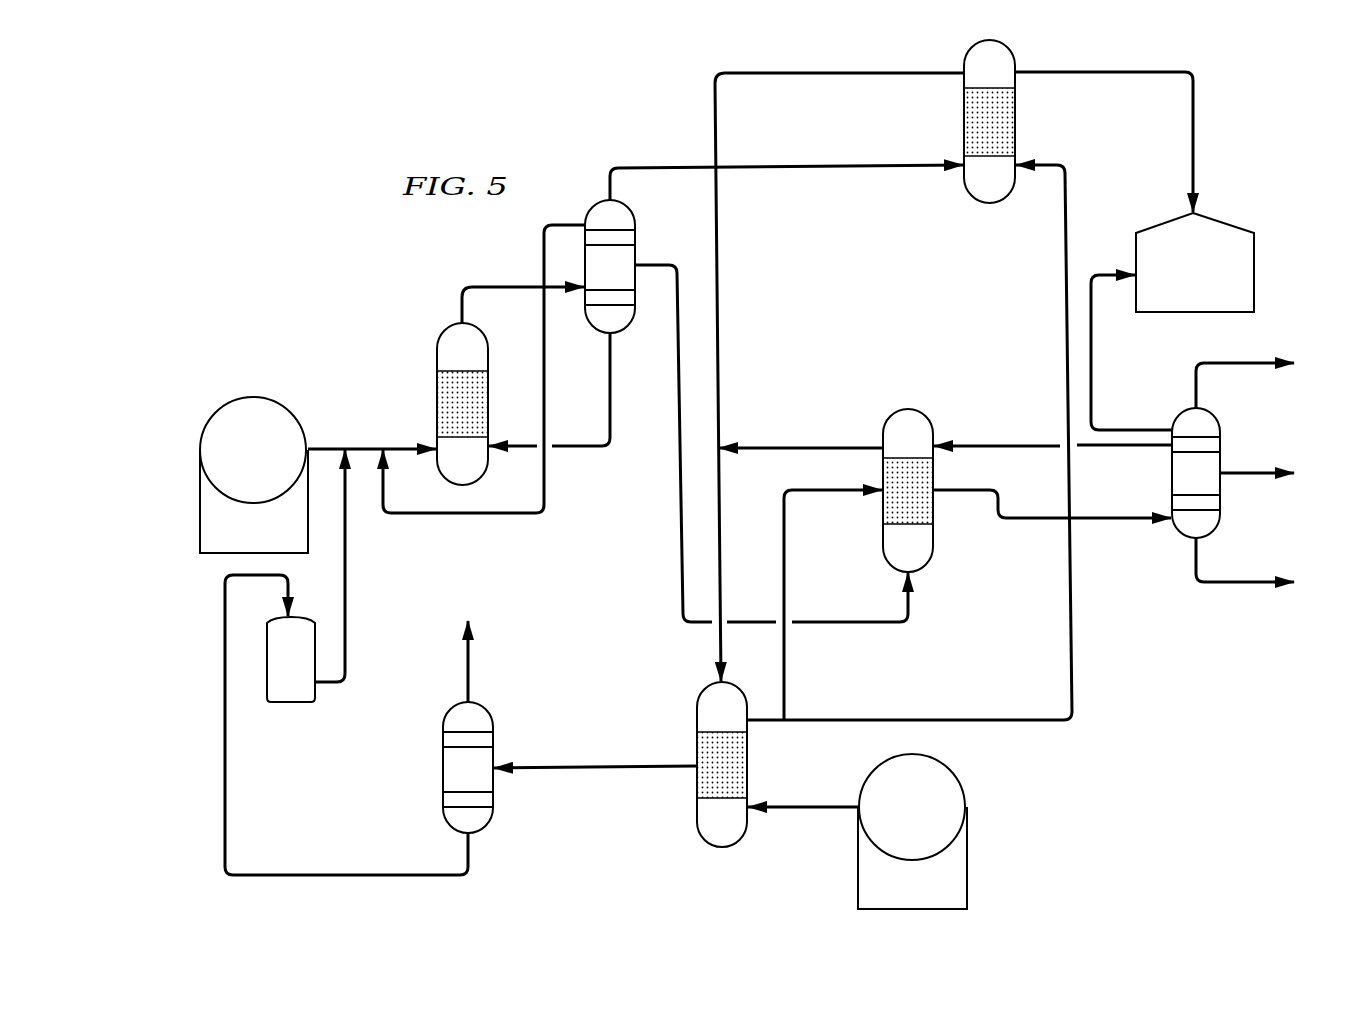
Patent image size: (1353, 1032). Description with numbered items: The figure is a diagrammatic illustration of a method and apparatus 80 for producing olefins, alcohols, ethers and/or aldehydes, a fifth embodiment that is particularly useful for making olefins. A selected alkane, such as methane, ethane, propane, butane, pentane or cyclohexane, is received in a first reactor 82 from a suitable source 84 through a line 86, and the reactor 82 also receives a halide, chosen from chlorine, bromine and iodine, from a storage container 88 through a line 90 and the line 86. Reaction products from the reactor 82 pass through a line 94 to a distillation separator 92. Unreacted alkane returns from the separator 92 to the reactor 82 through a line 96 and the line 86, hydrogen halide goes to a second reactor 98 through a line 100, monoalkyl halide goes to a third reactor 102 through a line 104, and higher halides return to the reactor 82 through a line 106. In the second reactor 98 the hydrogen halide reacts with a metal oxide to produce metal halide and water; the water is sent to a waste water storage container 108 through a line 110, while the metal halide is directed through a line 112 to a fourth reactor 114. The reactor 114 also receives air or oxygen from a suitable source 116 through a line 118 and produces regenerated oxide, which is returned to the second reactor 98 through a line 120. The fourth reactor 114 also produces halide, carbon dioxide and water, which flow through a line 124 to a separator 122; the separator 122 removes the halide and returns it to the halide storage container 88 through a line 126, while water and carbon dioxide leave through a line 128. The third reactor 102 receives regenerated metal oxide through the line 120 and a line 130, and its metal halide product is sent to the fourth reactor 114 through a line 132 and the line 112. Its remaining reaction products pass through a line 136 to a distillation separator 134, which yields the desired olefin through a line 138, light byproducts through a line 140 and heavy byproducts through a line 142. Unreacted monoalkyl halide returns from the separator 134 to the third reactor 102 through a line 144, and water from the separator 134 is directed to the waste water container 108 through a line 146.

The method and apparatus 80 is at (299, 279).
The first reactor 82 is at (437, 357).
The source 84 is at (245, 397).
The line 86 is at (360, 449).
The storage container 88 is at (282, 703).
The line 90 is at (345, 590).
The distillation separator 92 is at (635, 250).
The line 94 is at (492, 287).
The line 96 is at (452, 515).
The second reactor 98 is at (1015, 118).
The line 100 is at (832, 165).
The third reactor 102 is at (914, 409).
The line 104 is at (680, 548).
The line 106 is at (578, 447).
The waste water storage container 108 is at (1254, 264).
The line 110 is at (1193, 130).
The line 112 is at (717, 318).
The fourth reactor 114 is at (698, 825).
The source 116 is at (967, 848).
The line 118 is at (815, 808).
The line 120 is at (1071, 653).
The separator 122 is at (443, 785).
The line 124 is at (605, 769).
The line 126 is at (224, 769).
The line 128 is at (467, 672).
The line 130 is at (832, 491).
The line 132 is at (808, 447).
The distillation separator 134 is at (1172, 483).
The line 136 is at (1103, 519).
The line 138 is at (1250, 474).
The line 140 is at (1245, 364).
The line 142 is at (1250, 583).
The line 144 is at (1008, 447).
The line 146 is at (1091, 355).